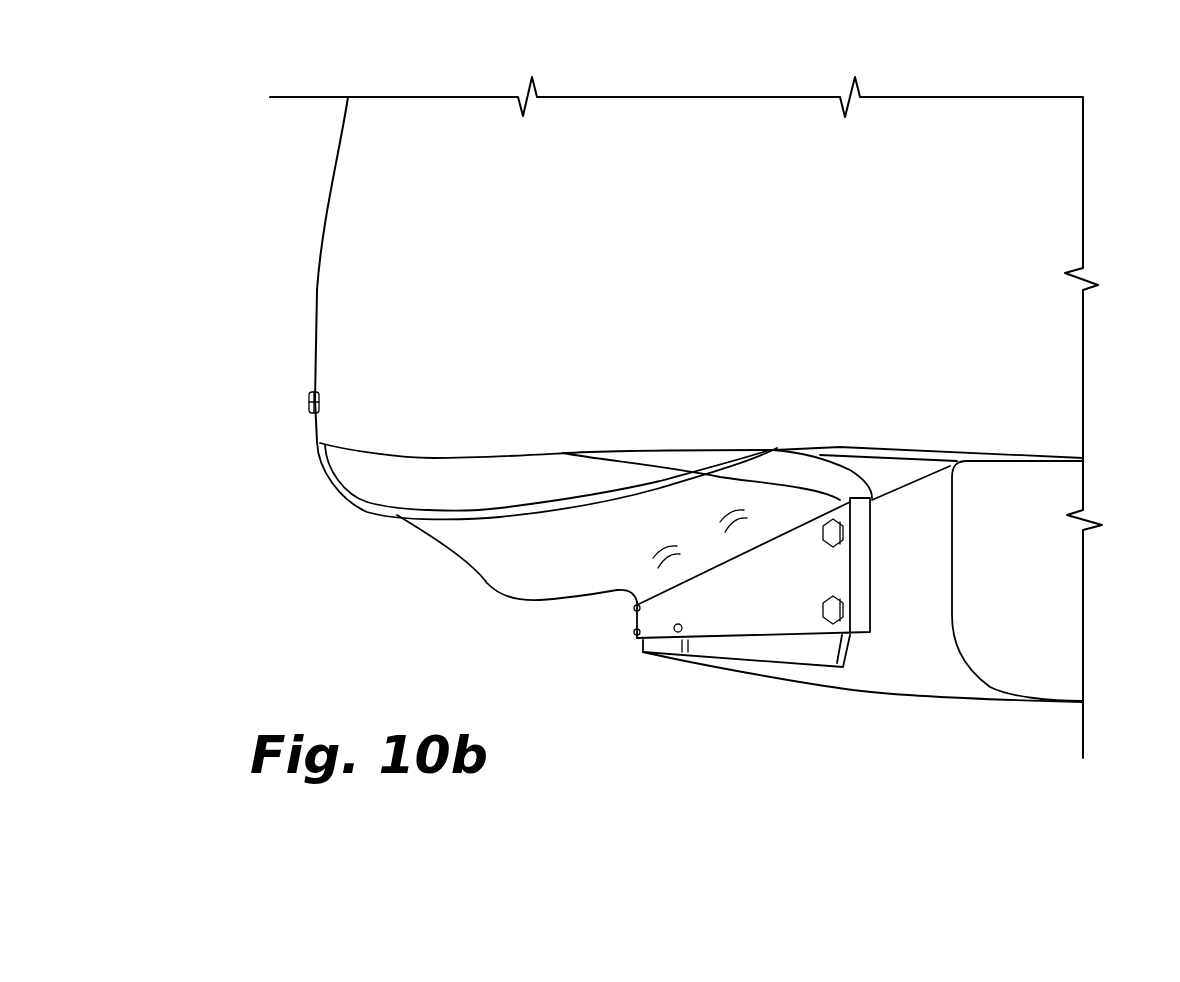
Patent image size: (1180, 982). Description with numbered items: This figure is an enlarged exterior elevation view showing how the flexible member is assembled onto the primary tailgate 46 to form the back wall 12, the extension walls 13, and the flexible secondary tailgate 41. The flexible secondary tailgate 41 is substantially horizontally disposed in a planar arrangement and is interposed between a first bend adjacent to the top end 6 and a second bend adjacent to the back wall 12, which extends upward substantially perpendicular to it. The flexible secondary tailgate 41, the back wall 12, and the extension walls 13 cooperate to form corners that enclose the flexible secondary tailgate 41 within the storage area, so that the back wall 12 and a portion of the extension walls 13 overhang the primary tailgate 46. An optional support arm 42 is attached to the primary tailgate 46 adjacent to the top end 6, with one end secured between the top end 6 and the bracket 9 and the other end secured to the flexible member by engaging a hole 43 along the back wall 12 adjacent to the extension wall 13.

The top end 6 is at (930, 600).
The bracket 9 is at (810, 578).
The back wall 12 is at (317, 267).
The extension wall 13 is at (607, 218).
The flexible secondary tailgate 41 is at (538, 542).
The support arm 42 is at (307, 402).
The hole 43 is at (307, 410).
The primary tailgate 46 is at (1025, 562).